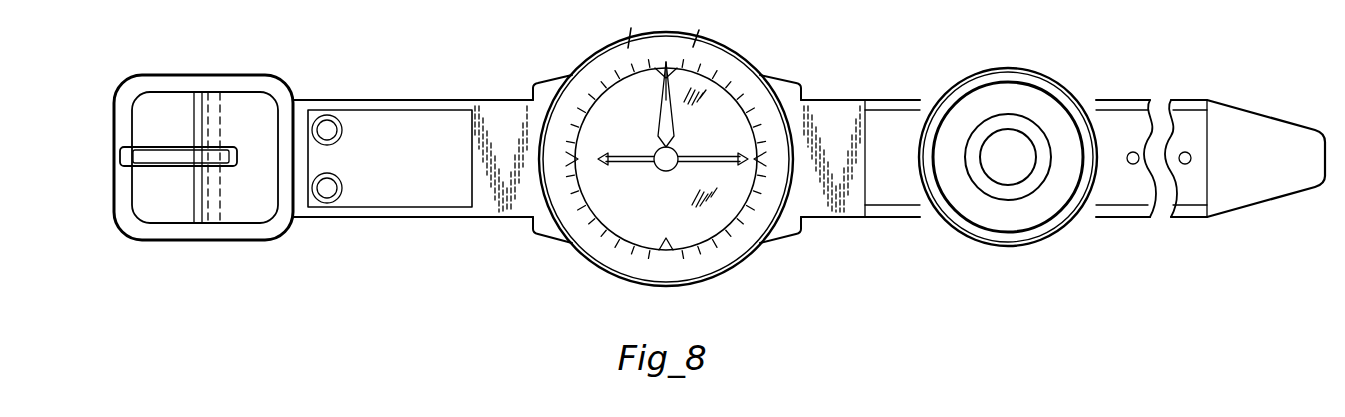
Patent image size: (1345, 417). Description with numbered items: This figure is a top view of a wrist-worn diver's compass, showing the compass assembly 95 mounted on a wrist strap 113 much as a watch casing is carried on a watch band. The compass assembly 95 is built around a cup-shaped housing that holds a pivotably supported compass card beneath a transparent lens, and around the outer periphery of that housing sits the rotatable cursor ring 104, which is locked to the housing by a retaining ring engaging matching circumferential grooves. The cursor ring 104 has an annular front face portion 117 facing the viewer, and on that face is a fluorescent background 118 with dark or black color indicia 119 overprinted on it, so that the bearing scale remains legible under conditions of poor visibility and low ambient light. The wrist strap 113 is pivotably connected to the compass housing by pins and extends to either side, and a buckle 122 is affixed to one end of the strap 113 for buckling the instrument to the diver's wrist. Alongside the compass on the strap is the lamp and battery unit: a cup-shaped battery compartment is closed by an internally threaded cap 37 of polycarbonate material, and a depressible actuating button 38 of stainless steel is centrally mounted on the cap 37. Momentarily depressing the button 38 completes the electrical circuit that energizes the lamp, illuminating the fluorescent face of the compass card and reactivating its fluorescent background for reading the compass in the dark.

The compass assembly 95 is at (674, 143).
The rotatable cursor ring 104 is at (579, 67).
The annular front face portion 117 is at (755, 67).
The fluorescent background 118 is at (707, 21).
The dark color indicia 119 is at (627, 62).
The wrist strap 113 is at (402, 118).
The buckle 122 is at (243, 75).
The cap 37 is at (1008, 144).
The depressible actuating button 38 is at (1021, 162).